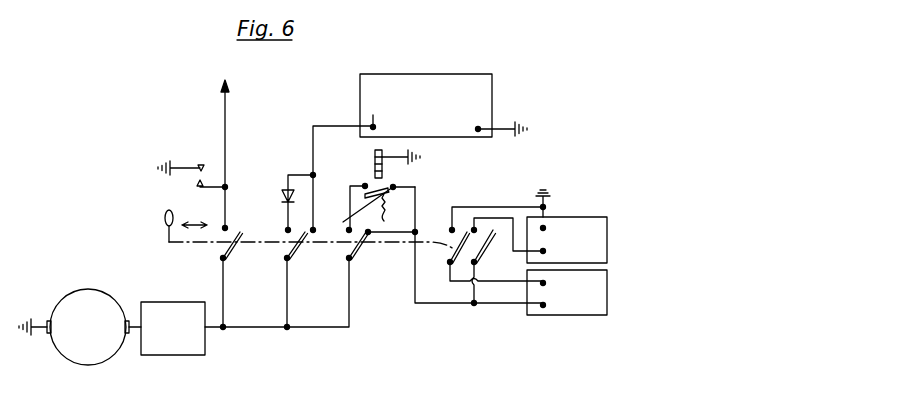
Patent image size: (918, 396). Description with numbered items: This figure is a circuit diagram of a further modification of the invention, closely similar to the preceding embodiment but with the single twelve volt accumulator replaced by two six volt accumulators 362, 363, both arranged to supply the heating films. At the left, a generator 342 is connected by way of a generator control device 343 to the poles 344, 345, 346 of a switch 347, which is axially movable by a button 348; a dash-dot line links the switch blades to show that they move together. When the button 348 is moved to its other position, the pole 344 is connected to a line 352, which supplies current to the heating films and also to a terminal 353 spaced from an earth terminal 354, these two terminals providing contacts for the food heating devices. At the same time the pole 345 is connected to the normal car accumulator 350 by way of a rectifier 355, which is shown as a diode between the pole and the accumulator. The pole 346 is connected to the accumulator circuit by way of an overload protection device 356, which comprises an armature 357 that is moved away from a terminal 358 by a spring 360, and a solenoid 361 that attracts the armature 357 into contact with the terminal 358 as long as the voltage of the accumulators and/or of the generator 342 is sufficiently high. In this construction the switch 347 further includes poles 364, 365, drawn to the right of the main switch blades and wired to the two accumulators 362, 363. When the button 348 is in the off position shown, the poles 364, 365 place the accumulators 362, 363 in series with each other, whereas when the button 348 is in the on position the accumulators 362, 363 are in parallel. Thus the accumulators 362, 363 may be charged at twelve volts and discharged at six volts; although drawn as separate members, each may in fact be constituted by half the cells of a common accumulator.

The generator 342 is at (84, 295).
The generator control device 343 is at (165, 302).
The pole 344 is at (232, 246).
The pole 345 is at (296, 246).
The pole 346 is at (358, 246).
The switch 347 is at (252, 220).
The button 348 is at (165, 217).
The accumulator 350 is at (472, 93).
The line 352 is at (226, 128).
The terminal 353 is at (197, 183).
The earth terminal 354 is at (200, 166).
The rectifier 355 is at (292, 198).
The overload protection device 356 is at (396, 153).
The armature 357 is at (395, 197).
The terminal 358 is at (365, 184).
The spring 360 is at (350, 222).
The solenoid 361 is at (373, 152).
The six volt accumulator 362 is at (568, 217).
The six volt accumulator 363 is at (563, 300).
The pole 364 is at (445, 248).
The pole 365 is at (480, 256).